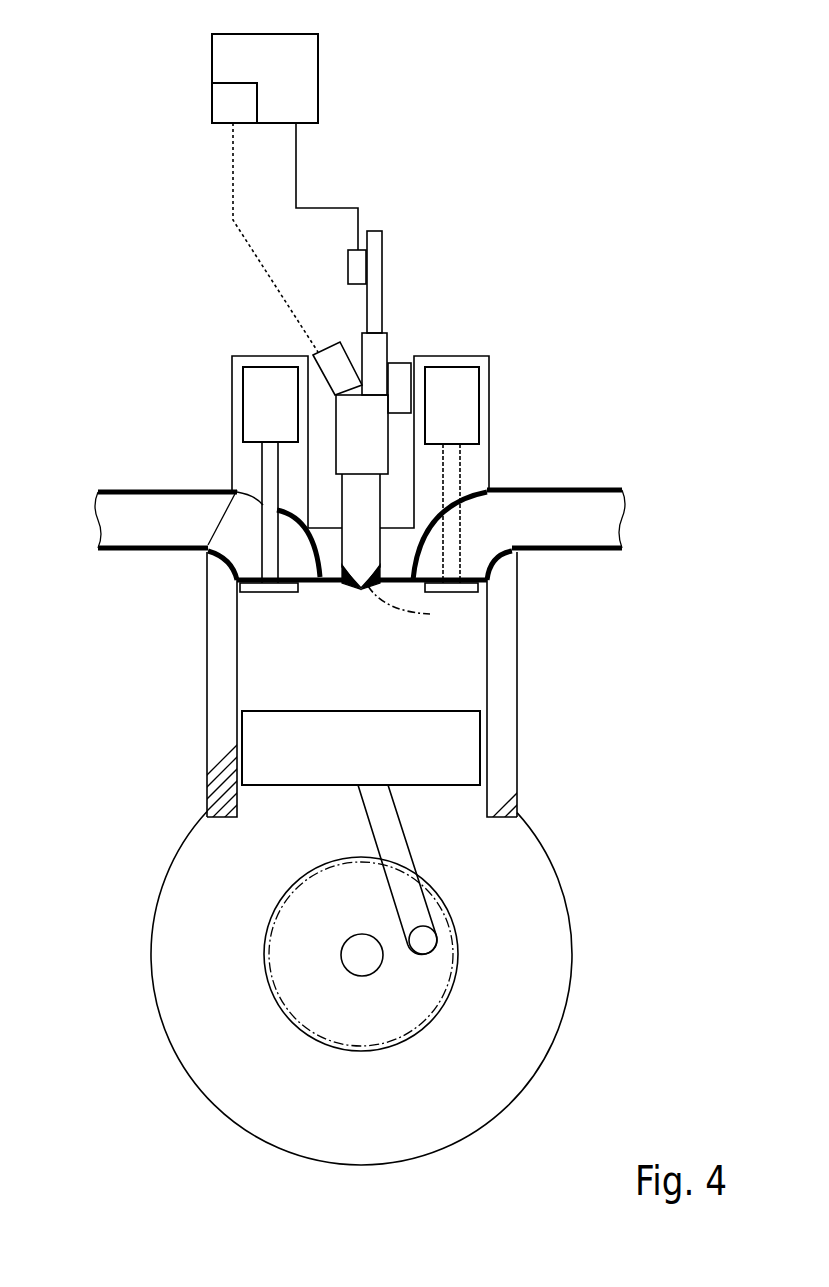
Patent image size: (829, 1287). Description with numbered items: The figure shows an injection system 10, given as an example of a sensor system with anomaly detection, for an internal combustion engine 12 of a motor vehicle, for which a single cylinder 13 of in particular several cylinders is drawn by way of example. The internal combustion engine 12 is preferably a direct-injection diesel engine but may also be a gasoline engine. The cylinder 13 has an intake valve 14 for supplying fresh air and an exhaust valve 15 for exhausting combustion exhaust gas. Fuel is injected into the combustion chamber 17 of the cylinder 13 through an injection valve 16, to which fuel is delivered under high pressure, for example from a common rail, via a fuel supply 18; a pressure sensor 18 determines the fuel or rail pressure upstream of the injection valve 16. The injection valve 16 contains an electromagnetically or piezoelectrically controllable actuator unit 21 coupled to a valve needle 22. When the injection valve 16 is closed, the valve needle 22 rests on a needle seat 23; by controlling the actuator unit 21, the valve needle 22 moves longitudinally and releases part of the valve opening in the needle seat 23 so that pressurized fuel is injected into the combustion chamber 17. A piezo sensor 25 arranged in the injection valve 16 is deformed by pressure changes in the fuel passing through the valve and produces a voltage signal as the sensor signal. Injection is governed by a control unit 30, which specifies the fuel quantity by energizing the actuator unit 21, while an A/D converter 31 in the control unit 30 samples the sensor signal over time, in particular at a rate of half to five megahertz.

The injection system 10 is at (516, 122).
The internal combustion engine 12 is at (515, 370).
The cylinder 13 is at (508, 740).
The intake valve 14 is at (243, 468).
The exhaust valve 15 is at (478, 470).
The injection valve 16 is at (375, 438).
The combustion chamber 17 is at (475, 668).
The fuel supply 18 is at (348, 266).
The actuator unit 21 is at (358, 462).
The valve needle 22 is at (378, 545).
The needle seat 23 is at (430, 614).
The piezo sensor 25 is at (318, 352).
The control unit 30 is at (212, 58).
The A/D converter 31 is at (212, 100).